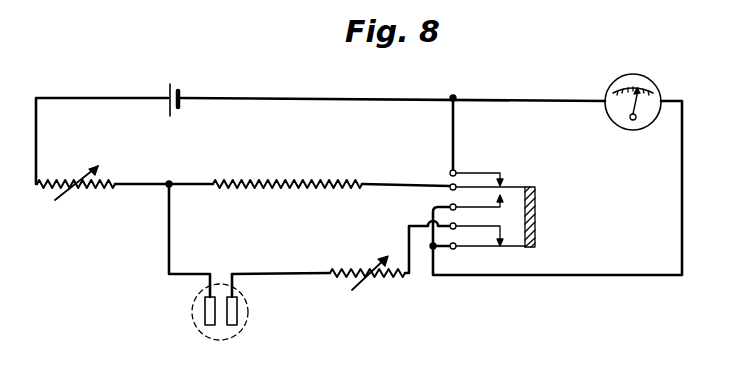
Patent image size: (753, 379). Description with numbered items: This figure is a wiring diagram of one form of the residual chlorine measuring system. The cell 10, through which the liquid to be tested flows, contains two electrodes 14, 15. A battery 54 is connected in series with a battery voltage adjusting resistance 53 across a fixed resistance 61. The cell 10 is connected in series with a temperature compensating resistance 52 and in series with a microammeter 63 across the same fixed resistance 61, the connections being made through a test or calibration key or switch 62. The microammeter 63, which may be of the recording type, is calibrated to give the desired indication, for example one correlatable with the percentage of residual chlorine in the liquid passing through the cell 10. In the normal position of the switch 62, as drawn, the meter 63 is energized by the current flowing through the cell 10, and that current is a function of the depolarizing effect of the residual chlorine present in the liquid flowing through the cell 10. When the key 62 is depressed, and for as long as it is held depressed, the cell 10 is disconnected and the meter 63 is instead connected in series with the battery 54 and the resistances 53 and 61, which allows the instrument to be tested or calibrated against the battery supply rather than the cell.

The cell 10 is at (212, 314).
The electrode 14 is at (207, 318).
The electrode 15 is at (236, 316).
The temperature compensating resistance 52 is at (381, 282).
The battery voltage adjusting resistance 53 is at (85, 195).
The battery 54 is at (179, 83).
The fixed resistance 61 is at (298, 190).
The test or calibration key or switch 62 is at (536, 178).
The microammeter 63 is at (651, 83).